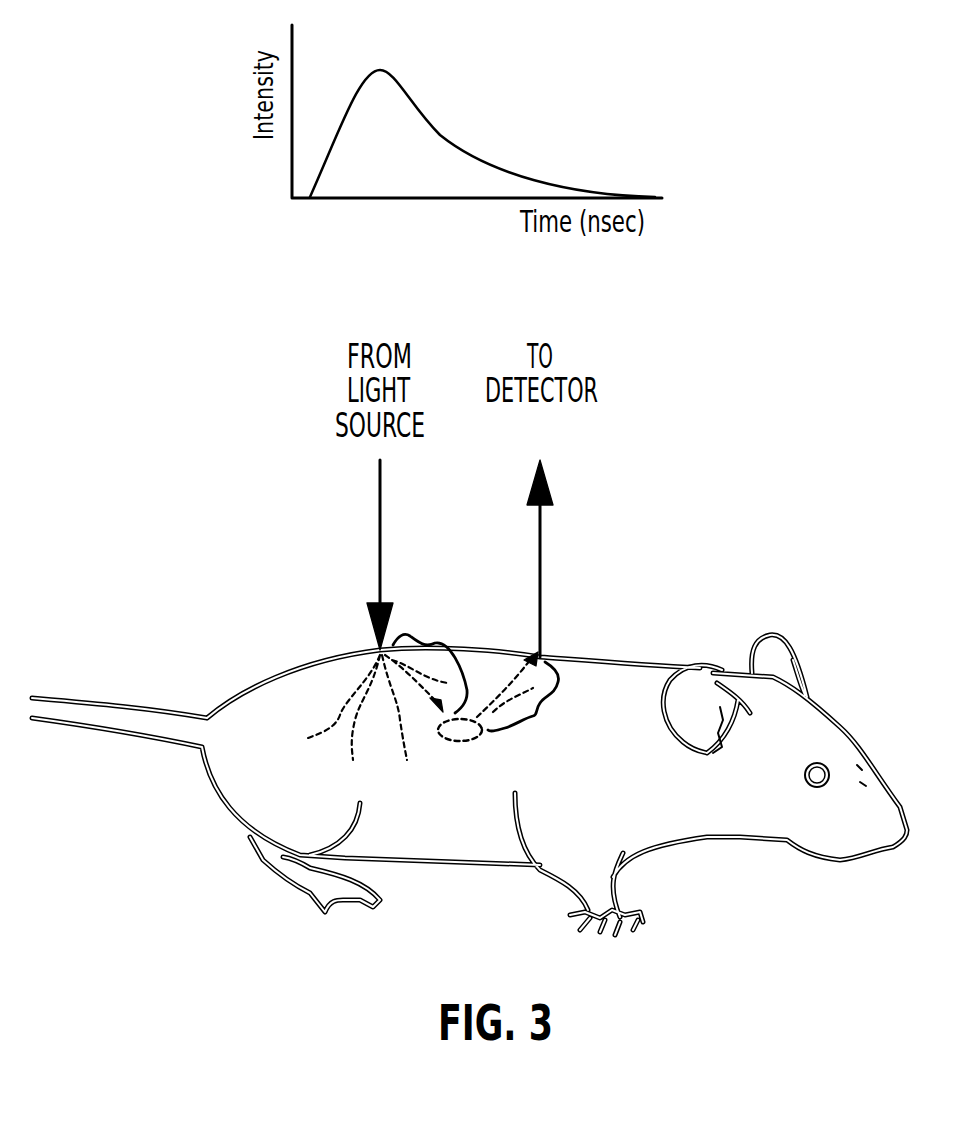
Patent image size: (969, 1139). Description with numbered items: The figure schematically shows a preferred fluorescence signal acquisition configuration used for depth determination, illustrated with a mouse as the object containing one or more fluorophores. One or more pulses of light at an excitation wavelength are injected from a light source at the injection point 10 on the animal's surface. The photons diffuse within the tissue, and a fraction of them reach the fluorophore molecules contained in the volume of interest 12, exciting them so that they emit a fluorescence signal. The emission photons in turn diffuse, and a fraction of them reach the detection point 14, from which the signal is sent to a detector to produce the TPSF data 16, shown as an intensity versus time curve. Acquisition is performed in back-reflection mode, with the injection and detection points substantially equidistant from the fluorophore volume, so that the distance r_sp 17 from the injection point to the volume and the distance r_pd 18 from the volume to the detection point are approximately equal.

The injection point 10 is at (375, 650).
The volume of interest 12 is at (455, 742).
The detection point 14 is at (540, 657).
The TPSF data 16 is at (442, 135).
The r_sp 17 is at (433, 645).
The r_pd 18 is at (531, 715).